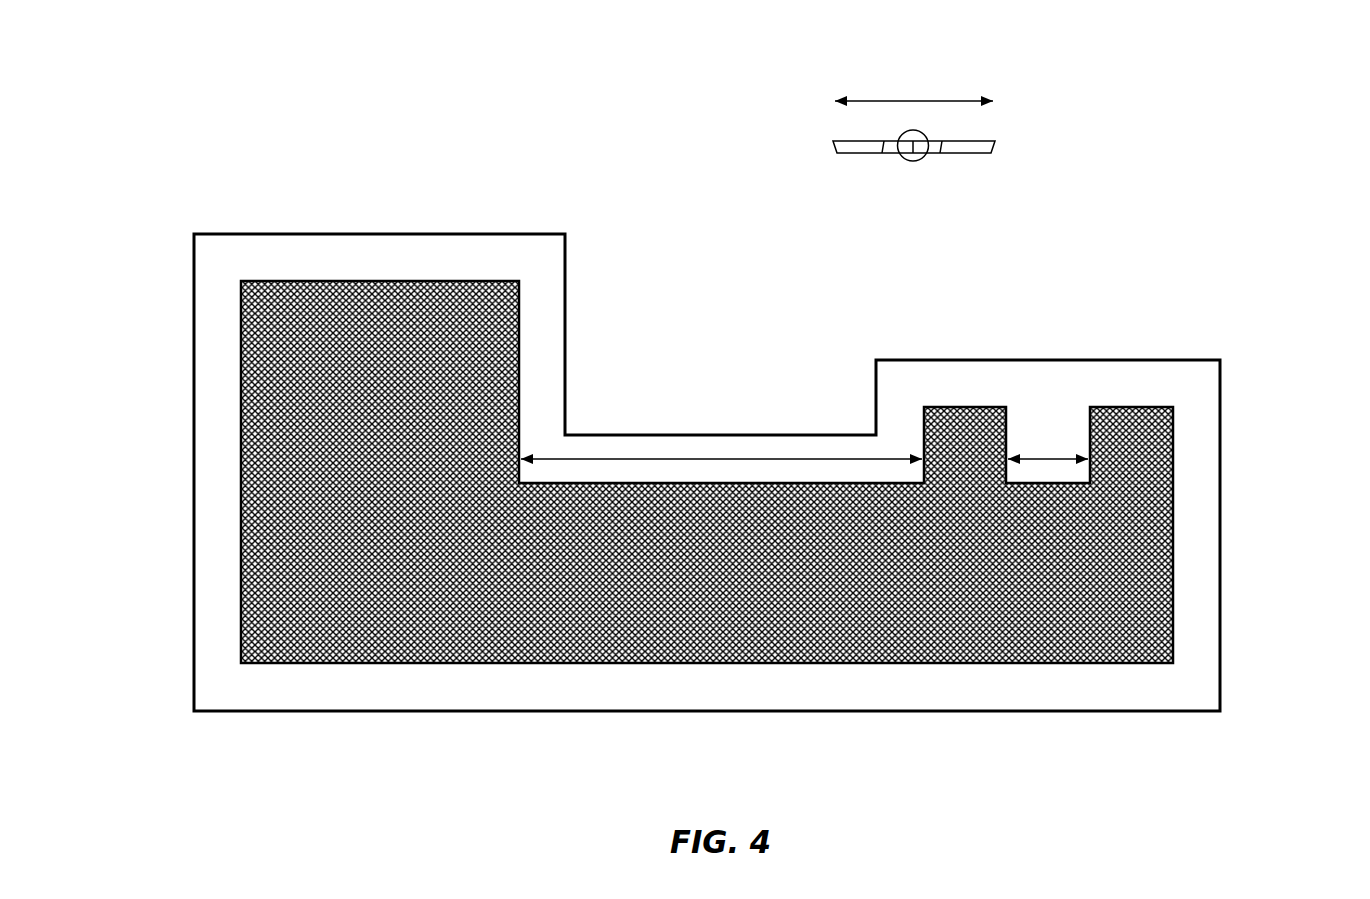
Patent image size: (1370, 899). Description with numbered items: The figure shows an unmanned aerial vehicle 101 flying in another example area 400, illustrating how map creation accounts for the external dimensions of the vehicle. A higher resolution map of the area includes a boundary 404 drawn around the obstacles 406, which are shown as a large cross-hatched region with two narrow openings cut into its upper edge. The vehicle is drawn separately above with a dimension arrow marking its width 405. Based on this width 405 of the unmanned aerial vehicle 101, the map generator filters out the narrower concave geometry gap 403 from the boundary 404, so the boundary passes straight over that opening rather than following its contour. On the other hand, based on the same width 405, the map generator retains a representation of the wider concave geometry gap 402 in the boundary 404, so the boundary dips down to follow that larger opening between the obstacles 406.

The area 400 is at (188, 98).
The unmanned aerial vehicle 101 is at (987, 141).
The concave geometry gap 402 is at (720, 451).
The concave geometry gap 403 is at (1038, 451).
The boundary 404 is at (364, 226).
The width 405 is at (900, 93).
The obstacles 406 is at (1165, 620).